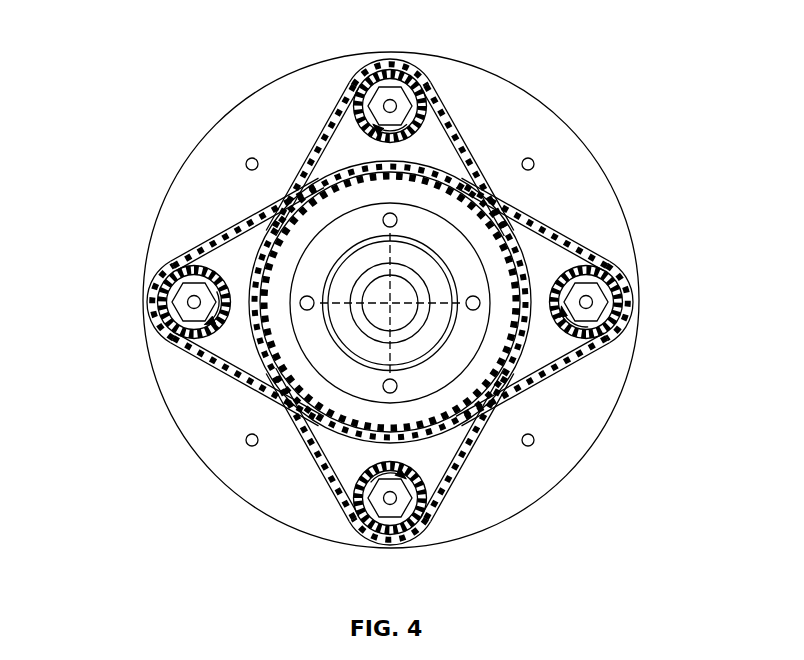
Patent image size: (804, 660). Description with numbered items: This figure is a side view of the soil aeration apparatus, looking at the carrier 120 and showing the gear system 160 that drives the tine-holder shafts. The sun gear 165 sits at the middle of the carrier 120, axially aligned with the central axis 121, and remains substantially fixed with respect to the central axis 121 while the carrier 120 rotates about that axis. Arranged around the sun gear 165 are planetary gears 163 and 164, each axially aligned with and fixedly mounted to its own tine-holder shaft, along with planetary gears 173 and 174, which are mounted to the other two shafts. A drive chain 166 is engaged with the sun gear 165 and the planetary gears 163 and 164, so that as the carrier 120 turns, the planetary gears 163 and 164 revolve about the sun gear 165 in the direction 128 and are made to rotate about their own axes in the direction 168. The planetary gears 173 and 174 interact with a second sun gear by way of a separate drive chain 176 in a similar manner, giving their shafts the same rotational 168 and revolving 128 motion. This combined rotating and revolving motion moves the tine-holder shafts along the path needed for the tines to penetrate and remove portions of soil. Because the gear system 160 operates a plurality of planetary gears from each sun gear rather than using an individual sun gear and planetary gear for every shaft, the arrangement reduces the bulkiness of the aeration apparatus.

The gear system 160 is at (160, 56).
The carrier 120 is at (293, 78).
The central axis 121 is at (398, 305).
The revolving direction 128 is at (385, 35).
The planetary gear 163 is at (386, 532).
The planetary gear 164 is at (371, 62).
The sun gear 165 is at (285, 397).
The drive chain 166 is at (466, 443).
The rotational direction 168 is at (336, 122).
The planetary gear 173 is at (614, 304).
The planetary gear 174 is at (162, 306).
The drive chain 176 is at (533, 223).